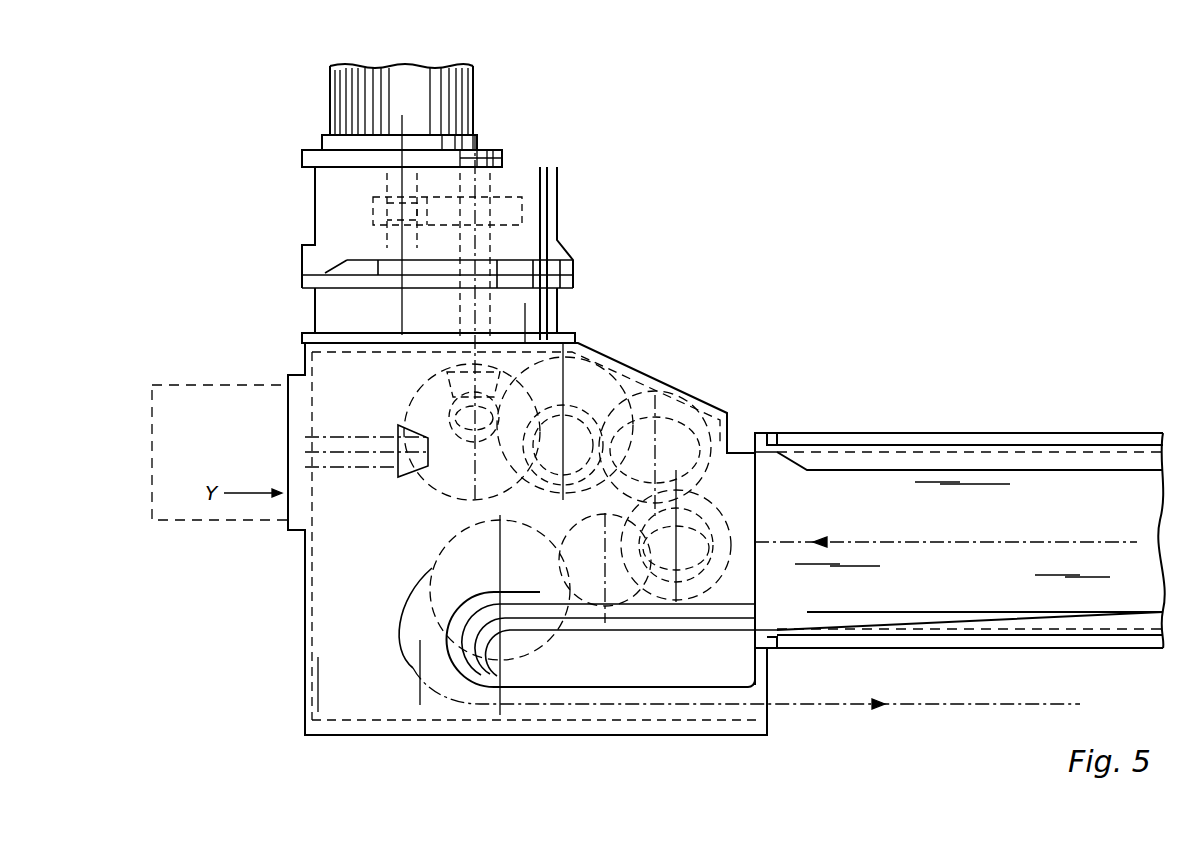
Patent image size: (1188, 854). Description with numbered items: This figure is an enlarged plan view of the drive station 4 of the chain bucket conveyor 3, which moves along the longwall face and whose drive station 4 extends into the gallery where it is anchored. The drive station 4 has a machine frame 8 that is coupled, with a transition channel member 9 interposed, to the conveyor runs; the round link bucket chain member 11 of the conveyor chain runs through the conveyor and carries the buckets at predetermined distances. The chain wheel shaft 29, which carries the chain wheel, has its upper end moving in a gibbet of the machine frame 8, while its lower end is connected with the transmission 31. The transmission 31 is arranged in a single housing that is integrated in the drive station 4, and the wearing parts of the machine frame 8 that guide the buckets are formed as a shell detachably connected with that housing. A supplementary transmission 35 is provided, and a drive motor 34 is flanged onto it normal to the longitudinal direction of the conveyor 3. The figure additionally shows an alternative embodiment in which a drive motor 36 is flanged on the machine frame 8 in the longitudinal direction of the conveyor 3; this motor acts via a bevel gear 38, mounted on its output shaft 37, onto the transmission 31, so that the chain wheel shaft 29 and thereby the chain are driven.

The chain bucket conveyor 3 is at (1088, 384).
The drive station 4 is at (757, 401).
The machine frame 8 is at (307, 662).
The transition channel member 9 is at (898, 432).
The round link bucket chain member 11 is at (940, 540).
The chain wheel shaft 29 is at (432, 568).
The transmission 31 is at (662, 398).
The drive motor 34 is at (512, 213).
The supplementary transmission 35 is at (352, 128).
The drive motor 36 is at (200, 398).
The output shaft 37 is at (343, 470).
The bevel gear 38 is at (405, 478).